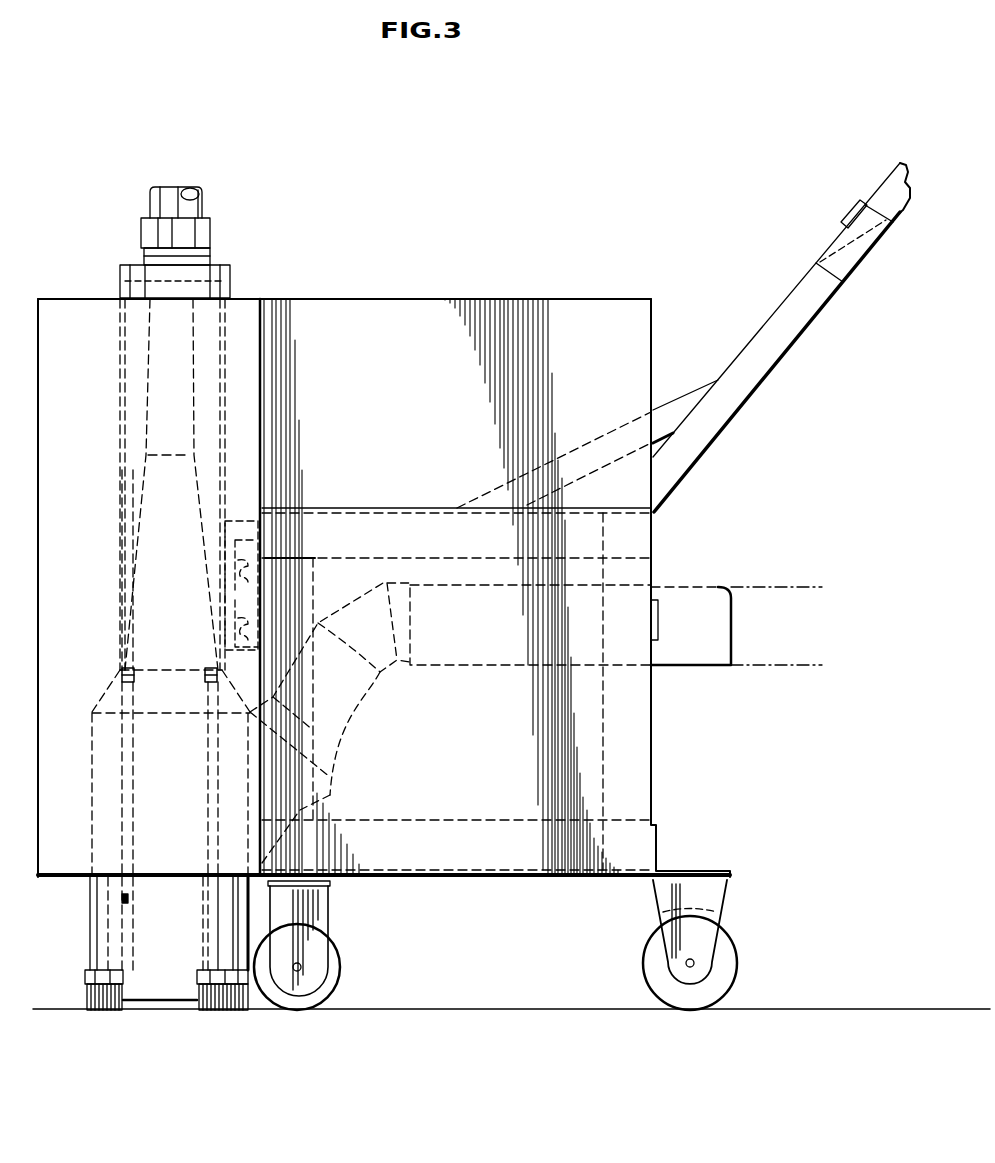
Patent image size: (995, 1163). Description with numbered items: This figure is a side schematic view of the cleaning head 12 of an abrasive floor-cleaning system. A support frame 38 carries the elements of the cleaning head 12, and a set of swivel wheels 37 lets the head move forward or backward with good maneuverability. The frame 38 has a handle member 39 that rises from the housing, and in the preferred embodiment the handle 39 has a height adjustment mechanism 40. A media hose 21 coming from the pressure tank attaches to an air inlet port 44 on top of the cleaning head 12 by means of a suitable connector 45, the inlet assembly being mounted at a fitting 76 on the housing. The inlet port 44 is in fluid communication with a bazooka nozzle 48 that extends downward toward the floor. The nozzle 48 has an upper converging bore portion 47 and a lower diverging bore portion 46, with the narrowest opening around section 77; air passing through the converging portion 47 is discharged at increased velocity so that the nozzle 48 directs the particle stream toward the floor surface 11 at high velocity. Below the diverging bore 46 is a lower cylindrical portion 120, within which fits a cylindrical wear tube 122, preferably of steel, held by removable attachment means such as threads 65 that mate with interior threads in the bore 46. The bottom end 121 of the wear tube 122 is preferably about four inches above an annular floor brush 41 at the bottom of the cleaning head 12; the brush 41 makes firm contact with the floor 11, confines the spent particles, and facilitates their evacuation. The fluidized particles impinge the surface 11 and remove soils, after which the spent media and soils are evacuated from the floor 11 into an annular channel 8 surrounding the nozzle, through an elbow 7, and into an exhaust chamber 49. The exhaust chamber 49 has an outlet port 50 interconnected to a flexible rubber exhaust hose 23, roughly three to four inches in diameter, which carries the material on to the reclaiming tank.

The cleaning head 12 is at (499, 165).
The support frame 38 is at (93, 482).
The flange fitting 76 is at (120, 283).
The air inlet port 44 is at (142, 262).
The connector 45 is at (200, 233).
The media hose 21 is at (152, 203).
The converging bore portion 47 is at (170, 318).
The section 77 is at (165, 360).
The diverging bore portion 46 is at (170, 430).
The bazooka nozzle 48 is at (155, 540).
The threads 65 is at (118, 675).
The annular channel 8 is at (104, 768).
The cylindrical portion 120 is at (140, 813).
The wear tube 122 is at (125, 840).
The bottom end of the wear tube 121 is at (123, 903).
The annular floor brush 41 is at (86, 976).
The swivel wheels 37 is at (327, 941).
The handle member 39 is at (793, 330).
The height adjustment mechanism 40 is at (860, 248).
The exhaust chamber 49 is at (478, 650).
The exhaust hose 23 is at (712, 590).
The outlet port 50 is at (653, 612).
The elbow 7 is at (340, 700).
The floor 11 is at (481, 1009).